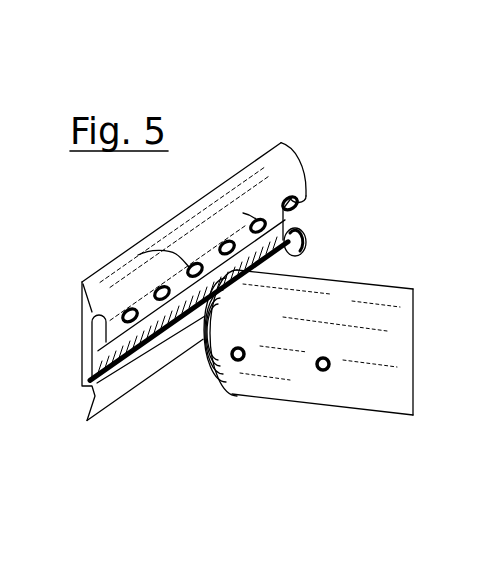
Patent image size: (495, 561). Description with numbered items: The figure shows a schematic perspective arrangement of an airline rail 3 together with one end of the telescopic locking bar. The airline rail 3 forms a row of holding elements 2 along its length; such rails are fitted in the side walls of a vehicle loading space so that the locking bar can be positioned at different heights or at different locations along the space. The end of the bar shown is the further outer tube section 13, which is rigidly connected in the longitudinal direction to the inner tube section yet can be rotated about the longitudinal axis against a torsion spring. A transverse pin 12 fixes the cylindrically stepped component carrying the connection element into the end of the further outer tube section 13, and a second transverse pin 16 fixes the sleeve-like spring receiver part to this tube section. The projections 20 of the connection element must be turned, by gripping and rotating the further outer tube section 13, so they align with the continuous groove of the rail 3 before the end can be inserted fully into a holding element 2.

The holding element 2 is at (243, 213).
The airline rail 3 is at (290, 167).
The transverse pin 12 is at (238, 359).
The further outer tube section 13 is at (337, 305).
The transverse pin 16 is at (322, 370).
The projection 20 is at (200, 347).